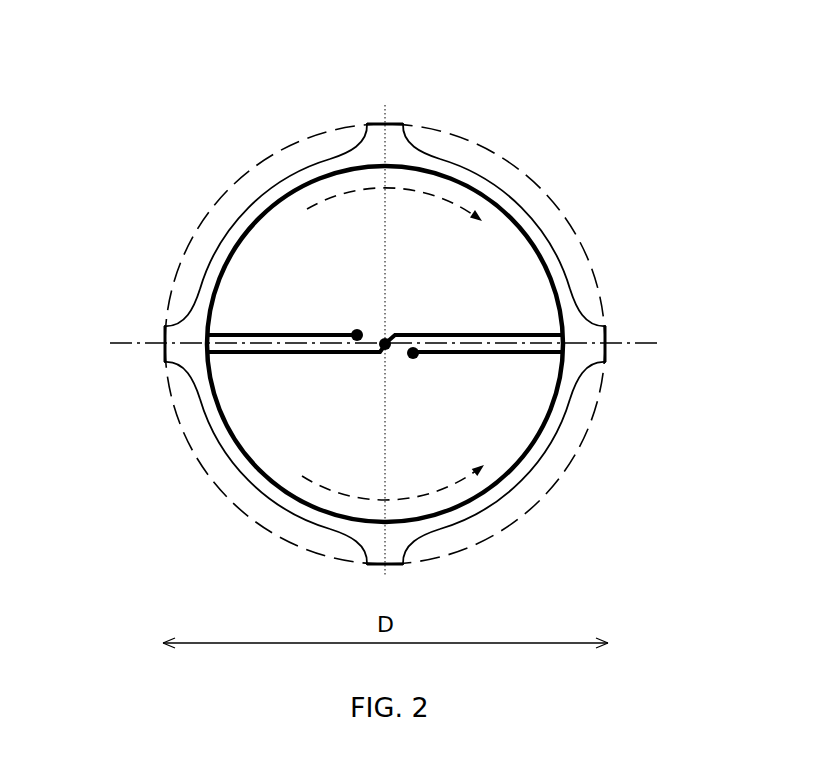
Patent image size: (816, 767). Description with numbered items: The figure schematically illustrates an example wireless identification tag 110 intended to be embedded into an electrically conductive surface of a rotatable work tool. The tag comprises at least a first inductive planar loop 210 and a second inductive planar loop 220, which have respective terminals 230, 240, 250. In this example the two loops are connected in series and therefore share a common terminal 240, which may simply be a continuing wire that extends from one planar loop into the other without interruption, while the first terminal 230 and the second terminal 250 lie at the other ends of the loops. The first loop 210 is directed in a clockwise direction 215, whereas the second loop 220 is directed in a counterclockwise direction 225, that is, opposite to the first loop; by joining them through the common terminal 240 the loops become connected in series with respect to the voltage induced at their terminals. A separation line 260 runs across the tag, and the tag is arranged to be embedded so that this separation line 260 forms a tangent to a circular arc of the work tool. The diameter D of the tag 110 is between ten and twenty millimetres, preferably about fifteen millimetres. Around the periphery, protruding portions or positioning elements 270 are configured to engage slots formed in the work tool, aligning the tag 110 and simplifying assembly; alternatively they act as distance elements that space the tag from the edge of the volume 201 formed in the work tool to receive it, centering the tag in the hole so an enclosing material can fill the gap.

The wireless identification tag 110 is at (121, 124).
The volume 201 is at (318, 130).
The first inductive planar loop 210 is at (525, 232).
The clockwise direction 215 is at (396, 223).
The second inductive planar loop 220 is at (522, 462).
The counterclockwise direction 225 is at (398, 470).
The first terminal 230 is at (357, 332).
The common terminal 240 is at (387, 339).
The second terminal 250 is at (413, 359).
The separation line 260 is at (122, 341).
The protruding portions 270 is at (410, 124).